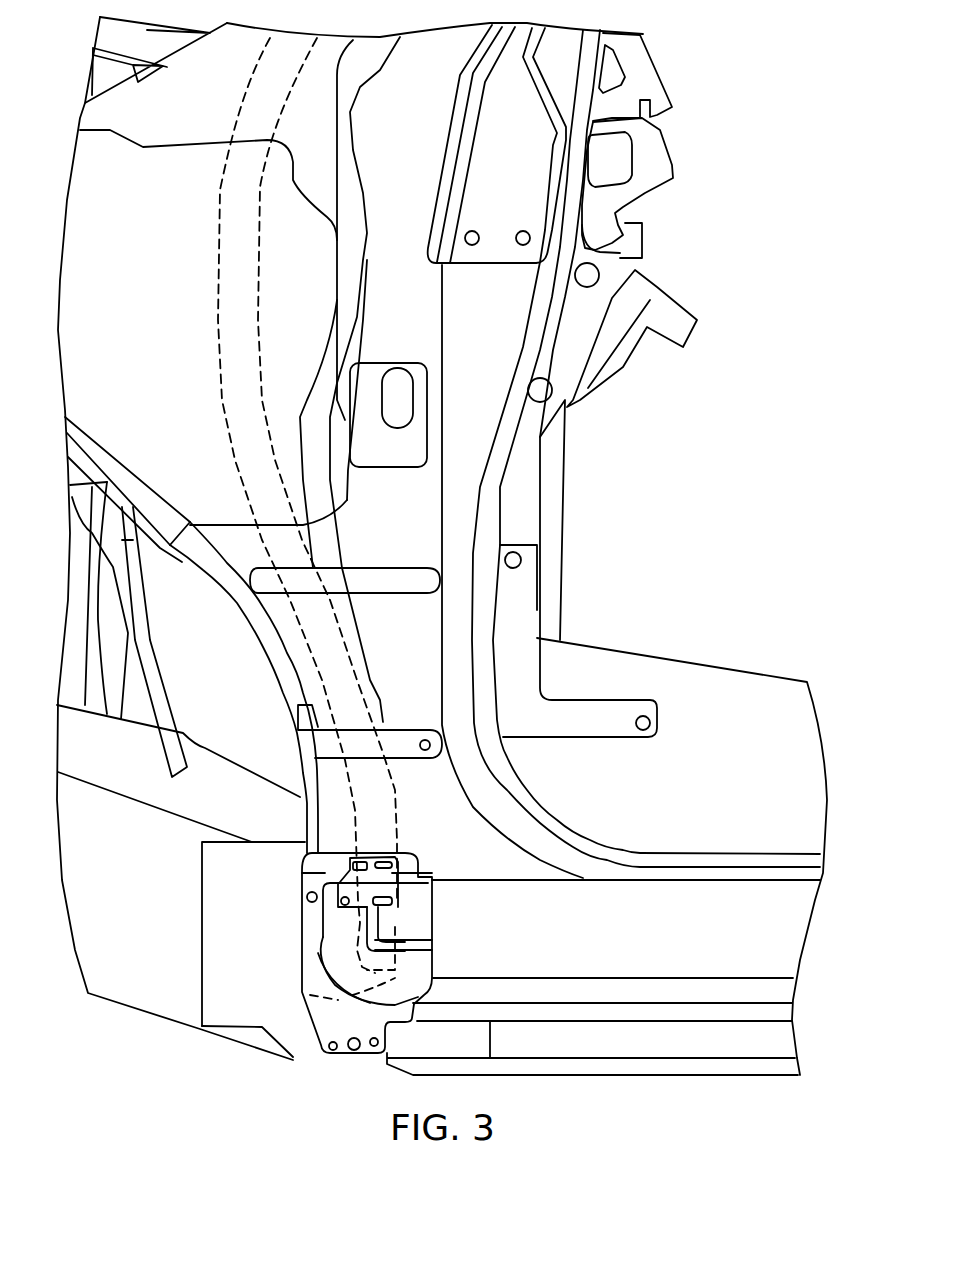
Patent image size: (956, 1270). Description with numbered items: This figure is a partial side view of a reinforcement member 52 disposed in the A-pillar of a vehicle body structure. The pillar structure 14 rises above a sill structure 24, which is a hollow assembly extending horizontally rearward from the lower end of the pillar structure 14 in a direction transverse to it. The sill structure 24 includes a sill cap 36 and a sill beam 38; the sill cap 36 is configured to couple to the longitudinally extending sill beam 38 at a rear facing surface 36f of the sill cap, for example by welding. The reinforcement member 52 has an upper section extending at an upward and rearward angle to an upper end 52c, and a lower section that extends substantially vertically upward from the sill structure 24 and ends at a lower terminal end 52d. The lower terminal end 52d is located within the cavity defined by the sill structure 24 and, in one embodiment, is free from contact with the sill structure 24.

The pillar structure 14 is at (297, 297).
The sill structure 24 is at (673, 1012).
The sill cap 36 is at (322, 1043).
The rear facing surface 36f is at (430, 955).
The sill beam 38 is at (587, 953).
The reinforcement member 52 is at (217, 277).
The upper end 52c is at (400, 932).
The lower terminal end 52d is at (310, 995).